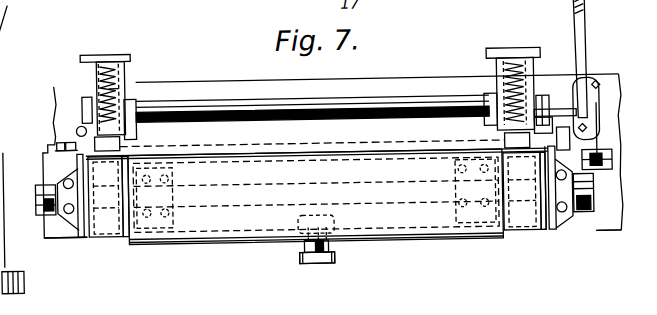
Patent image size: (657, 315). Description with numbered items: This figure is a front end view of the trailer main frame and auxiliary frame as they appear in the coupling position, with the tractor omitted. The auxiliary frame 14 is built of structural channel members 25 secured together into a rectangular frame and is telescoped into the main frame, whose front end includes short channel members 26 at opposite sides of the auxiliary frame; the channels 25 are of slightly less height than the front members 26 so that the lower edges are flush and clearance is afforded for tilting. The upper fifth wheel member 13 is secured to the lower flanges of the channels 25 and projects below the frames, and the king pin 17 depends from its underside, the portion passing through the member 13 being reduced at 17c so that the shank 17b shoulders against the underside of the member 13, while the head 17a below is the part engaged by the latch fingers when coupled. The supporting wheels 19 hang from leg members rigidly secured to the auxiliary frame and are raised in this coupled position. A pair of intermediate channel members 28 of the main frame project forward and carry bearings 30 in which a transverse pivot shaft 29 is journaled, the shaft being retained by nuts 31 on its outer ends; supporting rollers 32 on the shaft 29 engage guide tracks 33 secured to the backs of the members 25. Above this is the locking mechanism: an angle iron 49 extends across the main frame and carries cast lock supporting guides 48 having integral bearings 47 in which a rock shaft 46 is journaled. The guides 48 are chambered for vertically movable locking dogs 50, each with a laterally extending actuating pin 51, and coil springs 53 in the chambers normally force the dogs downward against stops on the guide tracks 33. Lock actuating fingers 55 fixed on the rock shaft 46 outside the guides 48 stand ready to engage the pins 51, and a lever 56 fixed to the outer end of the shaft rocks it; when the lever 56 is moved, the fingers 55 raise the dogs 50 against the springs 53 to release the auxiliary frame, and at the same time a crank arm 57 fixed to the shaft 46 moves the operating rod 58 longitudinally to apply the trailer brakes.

The upper fifth wheel member 13 is at (410, 240).
The auxiliary frame 14 is at (222, 224).
The king pin 17 is at (298, 254).
The head 17a is at (372, 280).
The shank 17b is at (328, 246).
The reduced portion 17c is at (379, 229).
The wheels 19 is at (3, 153).
The channel members 25 is at (447, 215).
The short channel members 26 is at (54, 222).
The intermediate channel members 28 is at (79, 227).
The pivot shaft 29 is at (187, 194).
The bearings 30 is at (65, 169).
The nuts 31 is at (45, 190).
The supporting rollers 32 is at (106, 226).
The guide tracks 33 is at (97, 233).
The rock shaft 46 is at (305, 100).
The bearings 47 is at (131, 104).
The lock supporting guides 48 is at (118, 88).
The angle iron 49 is at (208, 78).
The locking dogs 50 is at (122, 142).
The actuating pin 51 is at (88, 105).
The coil springs 53 is at (132, 54).
The lock actuating fingers 55 is at (80, 128).
The lever 56 is at (582, 30).
The crank arm 57 is at (606, 127).
The operating rod 58 is at (612, 156).